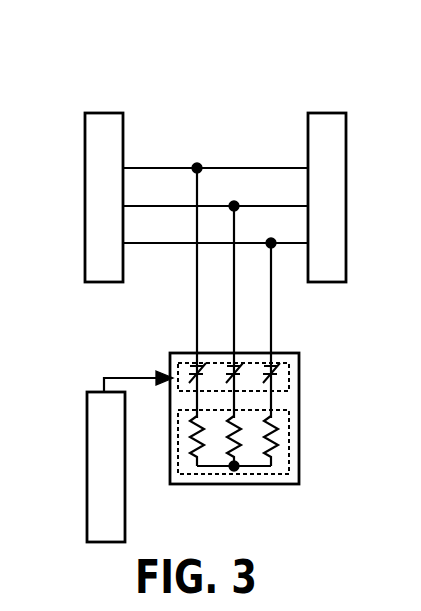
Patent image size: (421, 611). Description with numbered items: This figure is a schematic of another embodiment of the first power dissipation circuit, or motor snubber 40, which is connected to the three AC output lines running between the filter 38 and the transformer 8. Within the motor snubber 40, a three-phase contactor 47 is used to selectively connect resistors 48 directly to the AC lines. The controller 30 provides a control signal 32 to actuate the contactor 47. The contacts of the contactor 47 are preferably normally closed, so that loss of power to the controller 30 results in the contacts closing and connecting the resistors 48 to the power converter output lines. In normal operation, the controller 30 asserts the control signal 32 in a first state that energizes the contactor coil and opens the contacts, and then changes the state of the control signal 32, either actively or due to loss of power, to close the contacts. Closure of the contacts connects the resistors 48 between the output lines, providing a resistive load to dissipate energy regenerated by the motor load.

The transformer 8 is at (327, 113).
The controller 30 is at (87, 465).
The control signal 32 is at (143, 378).
The filter 38 is at (118, 113).
The motor snubber 40 is at (192, 353).
The contactor 47 is at (290, 376).
The resistors 48 is at (290, 440).